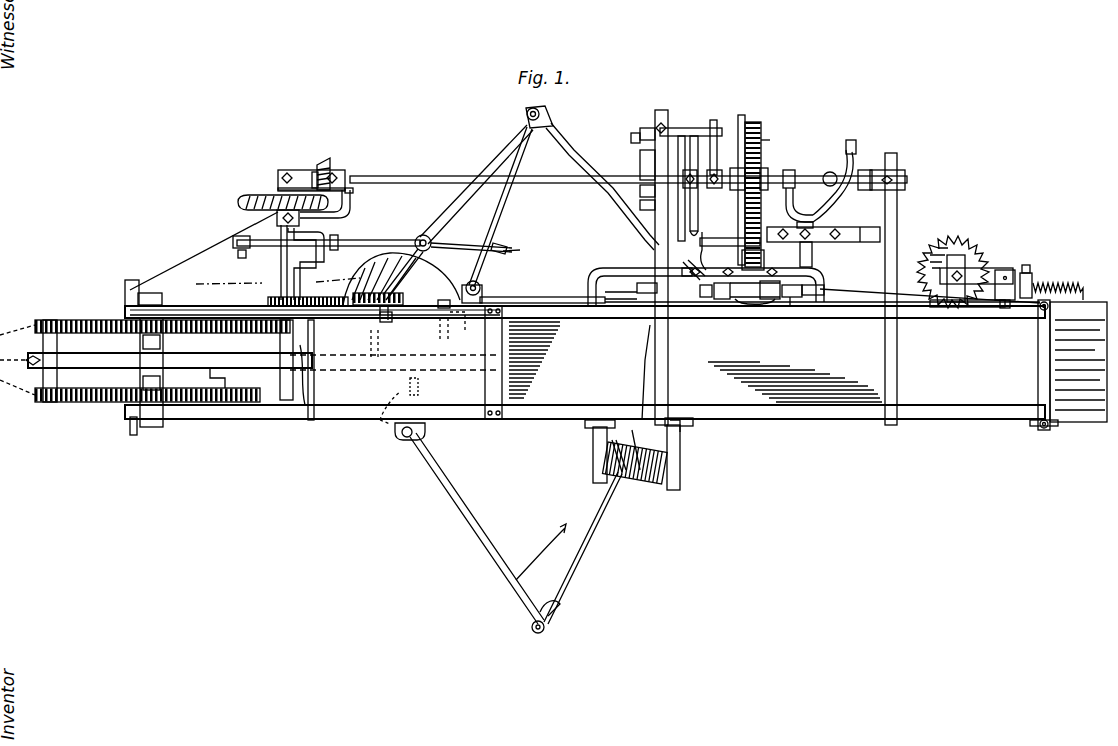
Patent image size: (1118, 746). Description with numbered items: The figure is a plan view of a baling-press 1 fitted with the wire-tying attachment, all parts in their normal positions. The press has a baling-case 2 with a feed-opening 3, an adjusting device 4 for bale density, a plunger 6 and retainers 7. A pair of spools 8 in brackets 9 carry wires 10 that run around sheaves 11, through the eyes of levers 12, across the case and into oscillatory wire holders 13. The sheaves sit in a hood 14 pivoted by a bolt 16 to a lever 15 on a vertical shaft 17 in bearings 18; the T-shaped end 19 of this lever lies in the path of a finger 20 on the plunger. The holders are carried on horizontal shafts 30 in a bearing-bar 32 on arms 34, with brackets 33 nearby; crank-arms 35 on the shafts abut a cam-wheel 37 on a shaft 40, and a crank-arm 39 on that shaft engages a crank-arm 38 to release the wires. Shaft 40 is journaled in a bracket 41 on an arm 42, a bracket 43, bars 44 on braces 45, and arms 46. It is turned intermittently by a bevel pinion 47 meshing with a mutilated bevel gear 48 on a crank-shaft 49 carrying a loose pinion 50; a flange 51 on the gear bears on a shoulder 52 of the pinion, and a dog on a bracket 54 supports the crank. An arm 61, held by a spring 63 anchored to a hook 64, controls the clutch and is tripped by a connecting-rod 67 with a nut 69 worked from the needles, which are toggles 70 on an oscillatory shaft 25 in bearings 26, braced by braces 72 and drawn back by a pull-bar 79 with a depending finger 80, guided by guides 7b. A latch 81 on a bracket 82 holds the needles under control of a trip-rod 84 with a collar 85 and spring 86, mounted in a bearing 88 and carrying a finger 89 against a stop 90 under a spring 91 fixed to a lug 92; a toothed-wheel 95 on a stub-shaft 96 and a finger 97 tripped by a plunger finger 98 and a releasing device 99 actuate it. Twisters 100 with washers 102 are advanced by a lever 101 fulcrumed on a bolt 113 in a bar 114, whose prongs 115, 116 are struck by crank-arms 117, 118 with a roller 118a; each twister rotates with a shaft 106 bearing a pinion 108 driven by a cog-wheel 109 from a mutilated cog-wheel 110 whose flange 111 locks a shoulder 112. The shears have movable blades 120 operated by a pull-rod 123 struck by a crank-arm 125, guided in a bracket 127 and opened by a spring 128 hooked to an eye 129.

The baling-press 1 is at (585, 401).
The baling-case 2 is at (795, 377).
The feed-opening 3 is at (541, 362).
The adjusting device 4 is at (1040, 428).
The plunger 6 is at (318, 395).
The retainers 7 is at (648, 328).
The guides 7b is at (682, 430).
The spools 8 is at (665, 492).
The brackets 9 is at (592, 440).
The wires 10 is at (628, 490).
The sheaves 11 is at (560, 604).
The levers 12 is at (636, 432).
The oscillatory wire holders 13 is at (640, 288).
The hood 14 is at (550, 626).
The lever 15 is at (460, 530).
The bolt 16 is at (539, 634).
The vertical shaft 17 is at (400, 436).
The bearings 18 is at (410, 440).
The T-shaped end 19 is at (432, 388).
The finger 20 is at (228, 390).
The oscillatory shaft 25 is at (480, 290).
The bearings 26 is at (500, 298).
The horizontal shafts 30 is at (654, 118).
The bearing-bar 32 is at (640, 156).
The brackets 33 is at (603, 268).
The arms 34 is at (661, 110).
The crank-arms 35 is at (632, 136).
The cam-wheel 37 is at (690, 136).
The crank-arm 38 is at (640, 205).
The crank-arm 39 is at (690, 128).
The shaft 40 is at (426, 176).
The bracket 41 is at (322, 162).
The arm 42 is at (234, 291).
The bracket 43 is at (640, 170).
The bars 44 is at (737, 168).
The braces 45 is at (755, 300).
The arms 46 is at (893, 156).
The bevel pinion 47 is at (340, 175).
The mutilated bevel gear wheel 48 is at (238, 202).
The crank-shaft 49 is at (334, 229).
The pinion 50 is at (300, 330).
The semicircular peripheral flange 51 is at (396, 200).
The shoulder 52 is at (353, 191).
The bracket 54 is at (326, 246).
The arm 61 is at (370, 353).
The retractile spring 63 is at (268, 300).
The hook 64 is at (165, 300).
The connecting-rod 67 is at (508, 248).
The nut 69 is at (505, 254).
The toggles 70 is at (580, 154).
The braces 72 is at (498, 216).
The pull-bar 79 is at (398, 237).
The depending finger 80 is at (237, 242).
The latch 81 is at (401, 279).
The bracket 82 is at (394, 293).
The trip-rod 84 is at (855, 291).
The collar 85 is at (390, 318).
The expansion spring 86 is at (390, 322).
The bearing 88 is at (1003, 270).
The finger 89 is at (1028, 273).
The stop 90 is at (1005, 300).
The retractile spring 91 is at (1068, 285).
The lug 92 is at (1078, 362).
The bale-actuated toothed-wheel 95 is at (945, 245).
The stub-shaft 96 is at (960, 262).
The finger 97 is at (439, 325).
The finger 98 is at (366, 360).
The releasing device 99 is at (462, 333).
The twisters 100 is at (792, 298).
The oscillatory lever 101 is at (810, 296).
The washers 102 is at (788, 300).
The shaft 106 is at (722, 300).
The pinions 108 is at (770, 300).
The small cog-wheel 109 is at (762, 253).
The large mutilated cog-wheel 110 is at (762, 132).
The semicircular peripheral flange 111 is at (762, 148).
The shoulder 112 is at (740, 244).
The bolt 113 is at (812, 236).
The bar 114 is at (860, 232).
The irregular prong 115 is at (792, 167).
The irregular prong 116 is at (865, 170).
The crank-arm 117 is at (798, 205).
The crank-arm 118 is at (838, 175).
The anti-friction roller 118a is at (832, 140).
The movable blades 120 is at (706, 297).
The pull-rod 123 is at (713, 120).
The crank-arm 125 is at (713, 248).
The bracket 127 is at (741, 115).
The retractile spring 128 is at (688, 312).
The eye 129 is at (690, 282).